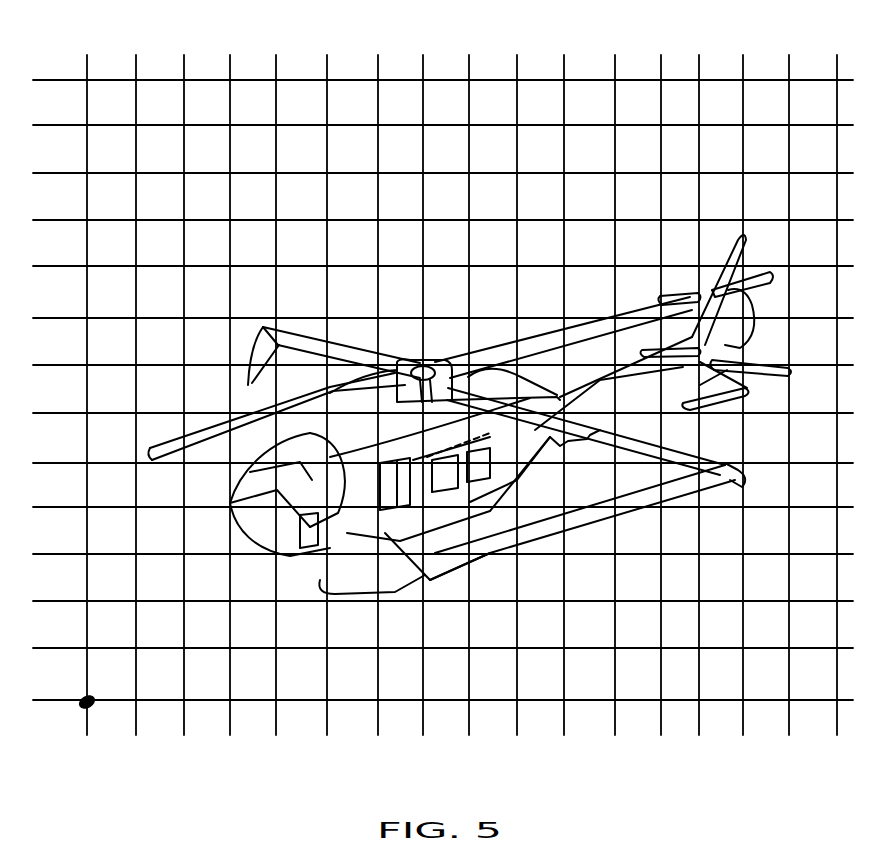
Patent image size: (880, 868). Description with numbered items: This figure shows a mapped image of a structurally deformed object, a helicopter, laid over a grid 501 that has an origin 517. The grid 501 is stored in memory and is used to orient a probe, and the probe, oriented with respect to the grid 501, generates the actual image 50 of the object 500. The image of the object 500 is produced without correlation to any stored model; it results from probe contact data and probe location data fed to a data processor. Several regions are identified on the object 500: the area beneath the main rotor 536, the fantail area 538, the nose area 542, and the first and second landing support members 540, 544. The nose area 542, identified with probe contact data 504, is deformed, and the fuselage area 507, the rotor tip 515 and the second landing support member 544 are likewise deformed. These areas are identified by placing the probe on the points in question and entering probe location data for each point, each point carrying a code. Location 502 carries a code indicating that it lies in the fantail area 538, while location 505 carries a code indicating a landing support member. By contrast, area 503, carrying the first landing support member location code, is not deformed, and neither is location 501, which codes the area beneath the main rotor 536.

The actual image 50 is at (690, 112).
The grid 501 is at (230, 62).
The object 500 is at (448, 303).
The rotor tip 515 is at (232, 375).
The main rotor 536 is at (443, 388).
The fantail area 538 is at (733, 312).
The location 502 is at (740, 330).
The location 505 is at (722, 402).
The second landing support member 544 is at (716, 428).
The fuselage area 507 is at (556, 462).
The nose area 542 is at (220, 524).
The probe contact data 504 is at (310, 527).
The first landing support member location code area 503 is at (442, 572).
The first landing support member 540 is at (470, 560).
The origin 517 is at (76, 712).